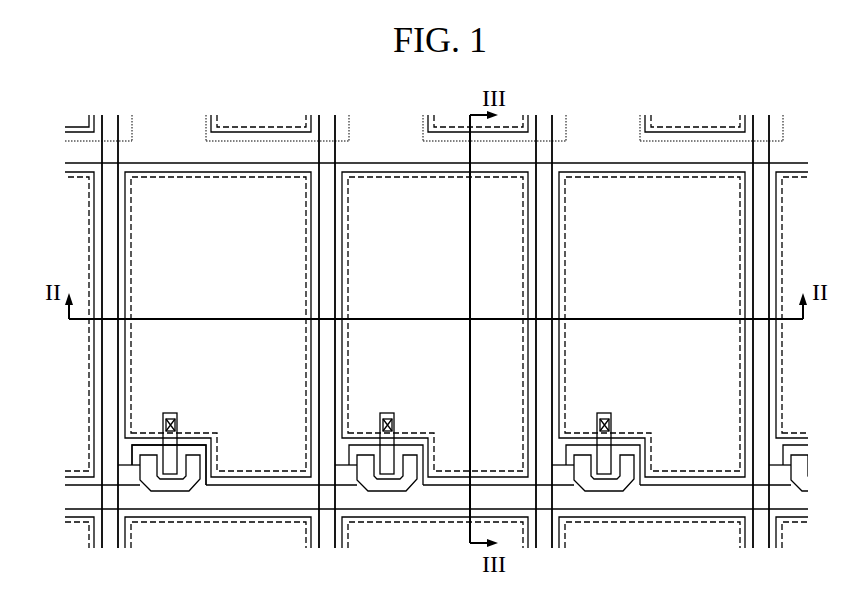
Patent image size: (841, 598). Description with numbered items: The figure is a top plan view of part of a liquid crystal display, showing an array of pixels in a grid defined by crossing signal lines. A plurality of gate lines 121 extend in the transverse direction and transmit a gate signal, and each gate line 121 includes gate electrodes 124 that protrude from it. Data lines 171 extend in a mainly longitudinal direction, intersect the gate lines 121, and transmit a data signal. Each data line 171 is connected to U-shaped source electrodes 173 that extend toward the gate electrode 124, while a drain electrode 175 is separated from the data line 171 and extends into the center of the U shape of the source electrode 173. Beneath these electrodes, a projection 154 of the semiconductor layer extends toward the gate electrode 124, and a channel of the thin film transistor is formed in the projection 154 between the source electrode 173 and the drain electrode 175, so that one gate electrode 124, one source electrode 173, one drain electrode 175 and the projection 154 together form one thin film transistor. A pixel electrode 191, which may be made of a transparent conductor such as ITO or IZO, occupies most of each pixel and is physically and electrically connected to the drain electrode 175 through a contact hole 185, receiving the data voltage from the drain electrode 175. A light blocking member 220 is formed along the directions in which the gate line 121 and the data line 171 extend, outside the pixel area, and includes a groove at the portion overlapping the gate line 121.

The gate line 121 is at (295, 510).
The gate electrode 124 is at (206, 465).
The projection 154 is at (181, 458).
The data line 171 is at (118, 265).
The source electrode 173 is at (162, 494).
The drain electrode 175 is at (180, 424).
The contact hole 185 is at (168, 414).
The pixel electrode 191 is at (128, 239).
The light blocking member 220 is at (306, 237).